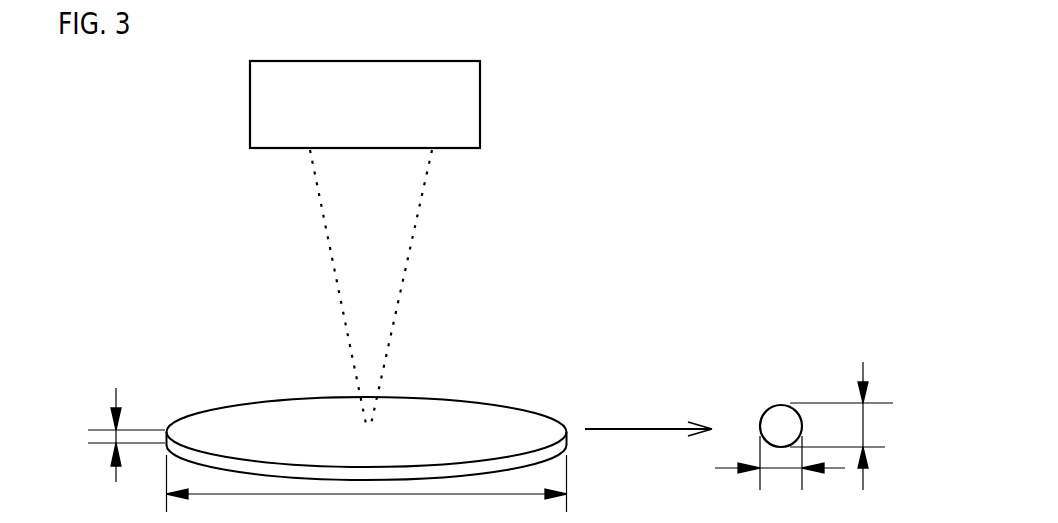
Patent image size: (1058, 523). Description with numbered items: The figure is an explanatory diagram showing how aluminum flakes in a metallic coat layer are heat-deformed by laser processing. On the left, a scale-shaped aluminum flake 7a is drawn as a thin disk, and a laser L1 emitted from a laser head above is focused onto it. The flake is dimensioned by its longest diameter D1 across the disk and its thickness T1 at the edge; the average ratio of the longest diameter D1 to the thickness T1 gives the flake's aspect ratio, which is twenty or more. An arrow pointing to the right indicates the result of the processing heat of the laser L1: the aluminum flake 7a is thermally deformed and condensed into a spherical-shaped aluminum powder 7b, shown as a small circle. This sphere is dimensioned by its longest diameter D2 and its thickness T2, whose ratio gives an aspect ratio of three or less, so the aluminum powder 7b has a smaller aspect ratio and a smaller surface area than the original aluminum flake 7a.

The aluminum flake 7a is at (256, 414).
The spherical-shaped aluminum powder 7b is at (781, 407).
The laser L1 is at (402, 284).
The thickness T1 is at (120, 437).
The longest diameter D1 is at (367, 489).
The thickness T2 is at (843, 426).
The longest diameter D2 is at (780, 471).